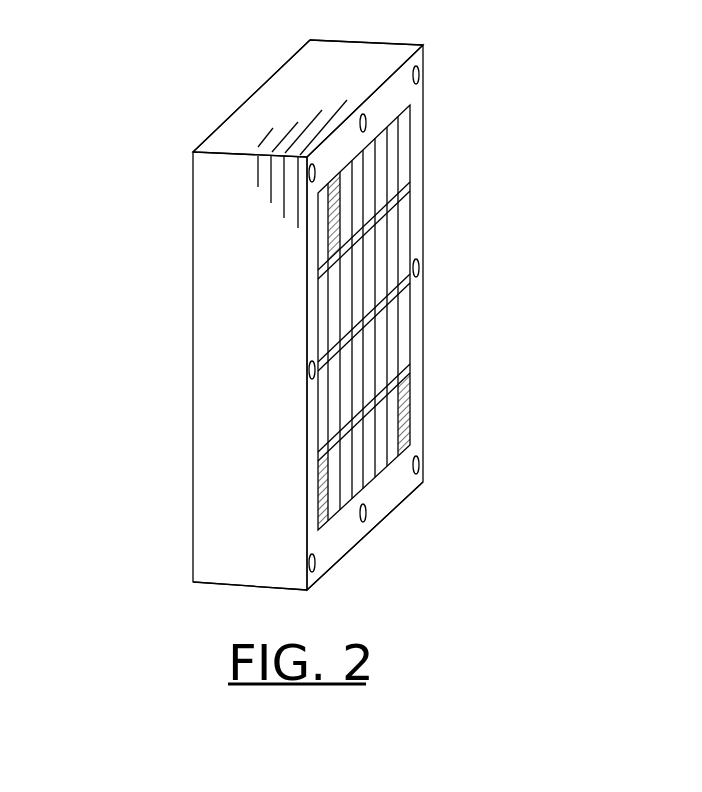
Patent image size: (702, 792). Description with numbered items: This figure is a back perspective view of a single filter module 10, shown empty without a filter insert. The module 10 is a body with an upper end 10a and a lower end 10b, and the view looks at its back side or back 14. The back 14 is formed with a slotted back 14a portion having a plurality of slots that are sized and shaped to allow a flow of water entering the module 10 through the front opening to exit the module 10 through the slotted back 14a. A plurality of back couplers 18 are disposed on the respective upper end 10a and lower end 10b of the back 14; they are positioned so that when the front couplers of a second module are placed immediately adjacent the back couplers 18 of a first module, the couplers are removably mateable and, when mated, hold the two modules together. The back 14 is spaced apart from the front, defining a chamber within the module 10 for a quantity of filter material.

The filter module 10 is at (200, 273).
The upper end 10a is at (440, 54).
The lower end 10b is at (438, 440).
The back side 14 is at (438, 325).
The slotted back 14a is at (383, 253).
The back couplers 18 is at (367, 122).